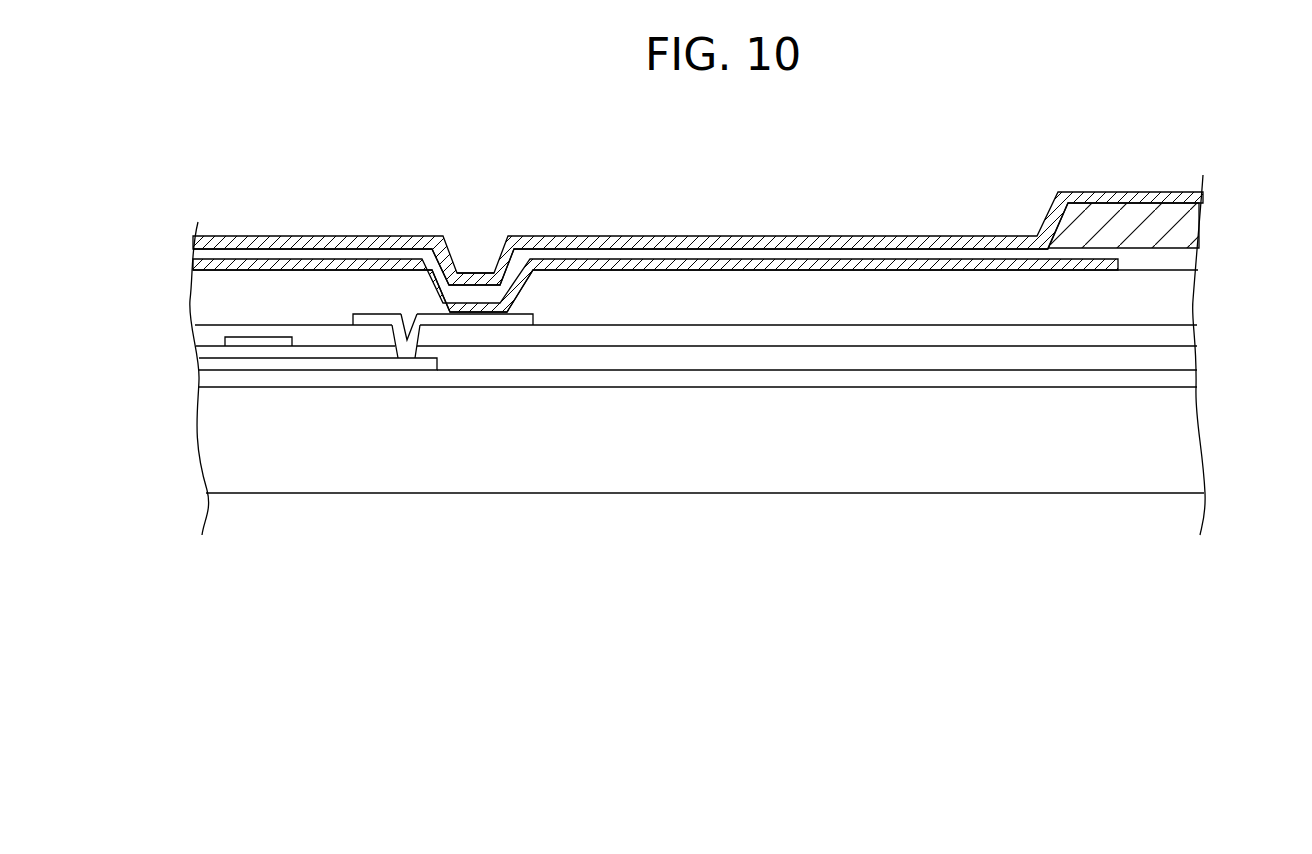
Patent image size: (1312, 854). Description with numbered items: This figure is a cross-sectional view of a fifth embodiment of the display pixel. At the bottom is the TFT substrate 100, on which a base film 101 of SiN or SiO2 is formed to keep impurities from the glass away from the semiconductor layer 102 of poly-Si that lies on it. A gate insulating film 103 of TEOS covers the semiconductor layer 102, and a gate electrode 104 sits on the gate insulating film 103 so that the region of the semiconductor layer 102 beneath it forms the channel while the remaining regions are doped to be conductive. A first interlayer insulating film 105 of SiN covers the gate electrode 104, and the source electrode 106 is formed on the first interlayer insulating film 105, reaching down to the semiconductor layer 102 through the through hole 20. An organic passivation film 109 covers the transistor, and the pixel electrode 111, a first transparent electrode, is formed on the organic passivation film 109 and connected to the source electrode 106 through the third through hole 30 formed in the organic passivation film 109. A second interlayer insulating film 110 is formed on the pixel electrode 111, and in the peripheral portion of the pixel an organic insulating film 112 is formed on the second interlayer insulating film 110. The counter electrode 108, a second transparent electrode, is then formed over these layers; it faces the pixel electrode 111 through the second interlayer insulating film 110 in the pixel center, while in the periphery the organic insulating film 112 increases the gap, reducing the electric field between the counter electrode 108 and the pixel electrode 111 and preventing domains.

The contact hole 20 is at (407, 318).
The third through hole 30 is at (475, 297).
The TFT substrate 100 is at (1180, 443).
The base film 101 is at (1180, 384).
The semiconductor layer 102 is at (327, 365).
The gate insulating film 103 is at (1180, 359).
The gate electrode 104 is at (255, 340).
The first interlayer insulating film 105 is at (1180, 333).
The source electrode 106 is at (470, 320).
The counter electrode 108 is at (968, 243).
The organic passivation film 109 is at (207, 297).
The second interlayer insulating film 110 is at (856, 256).
The pixel electrode 111 is at (762, 262).
The organic insulating film 112 is at (1178, 222).